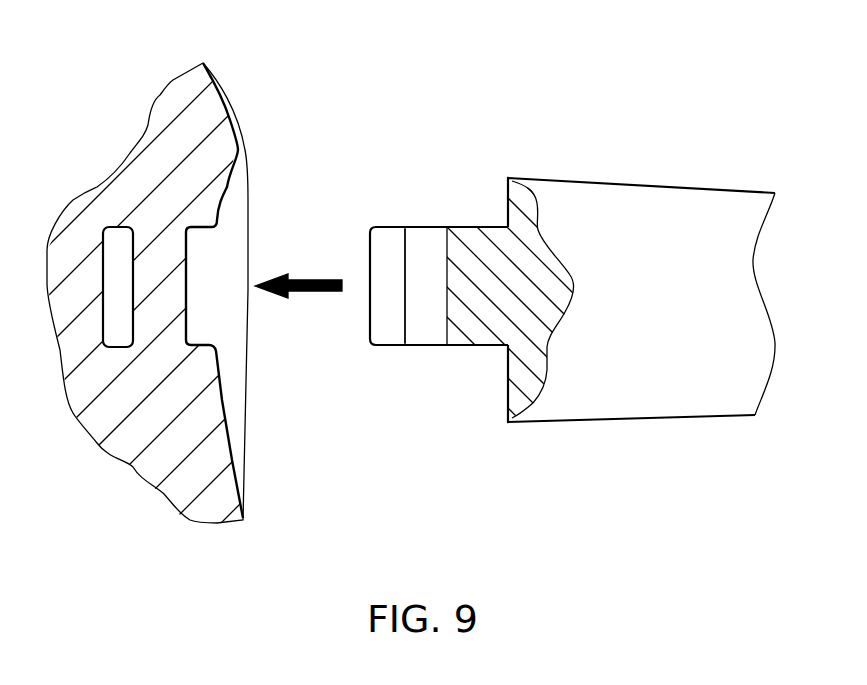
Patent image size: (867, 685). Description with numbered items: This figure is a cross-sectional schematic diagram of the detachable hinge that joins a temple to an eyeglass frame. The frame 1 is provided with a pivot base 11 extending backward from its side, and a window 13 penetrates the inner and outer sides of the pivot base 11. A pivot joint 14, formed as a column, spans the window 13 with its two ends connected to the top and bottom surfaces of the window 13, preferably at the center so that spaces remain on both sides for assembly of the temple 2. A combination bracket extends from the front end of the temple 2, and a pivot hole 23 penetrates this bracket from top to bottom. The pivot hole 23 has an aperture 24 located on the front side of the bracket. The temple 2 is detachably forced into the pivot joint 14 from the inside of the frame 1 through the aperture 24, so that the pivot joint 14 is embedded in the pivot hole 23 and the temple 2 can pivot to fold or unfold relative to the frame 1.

The frame 1 is at (183, 100).
The pivot base 11 is at (187, 197).
The window 13 is at (118, 240).
The pivot joint 14 is at (163, 262).
The temple 2 is at (593, 203).
The pivot hole 23 is at (428, 253).
The aperture 24 is at (387, 303).